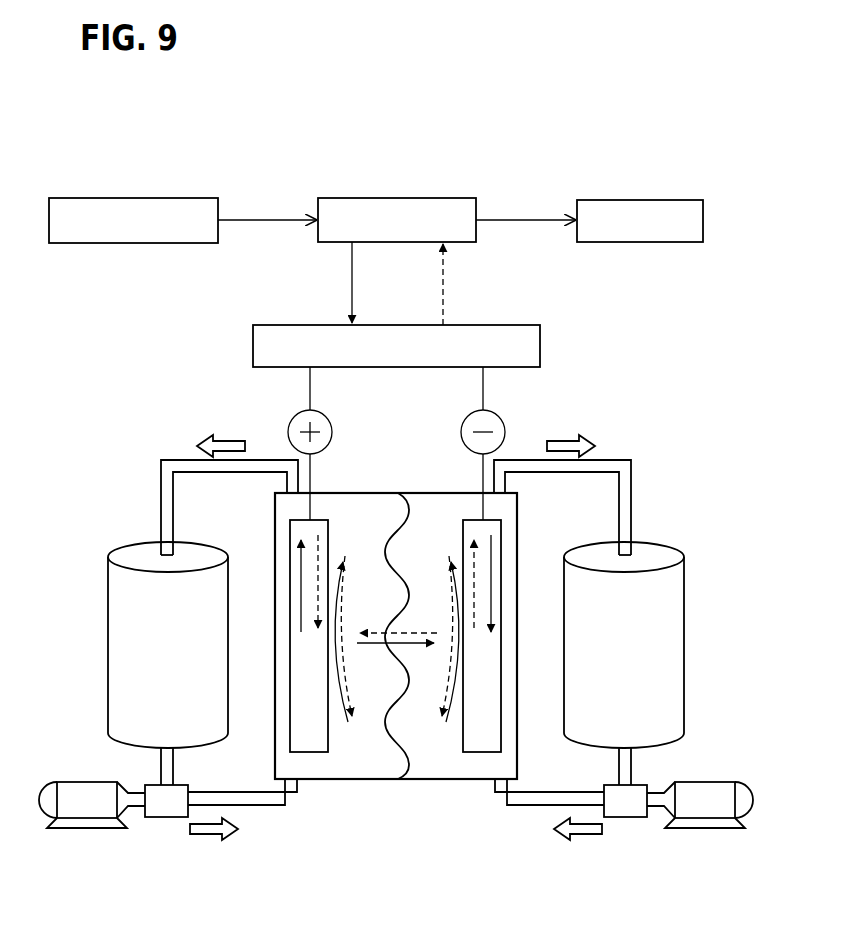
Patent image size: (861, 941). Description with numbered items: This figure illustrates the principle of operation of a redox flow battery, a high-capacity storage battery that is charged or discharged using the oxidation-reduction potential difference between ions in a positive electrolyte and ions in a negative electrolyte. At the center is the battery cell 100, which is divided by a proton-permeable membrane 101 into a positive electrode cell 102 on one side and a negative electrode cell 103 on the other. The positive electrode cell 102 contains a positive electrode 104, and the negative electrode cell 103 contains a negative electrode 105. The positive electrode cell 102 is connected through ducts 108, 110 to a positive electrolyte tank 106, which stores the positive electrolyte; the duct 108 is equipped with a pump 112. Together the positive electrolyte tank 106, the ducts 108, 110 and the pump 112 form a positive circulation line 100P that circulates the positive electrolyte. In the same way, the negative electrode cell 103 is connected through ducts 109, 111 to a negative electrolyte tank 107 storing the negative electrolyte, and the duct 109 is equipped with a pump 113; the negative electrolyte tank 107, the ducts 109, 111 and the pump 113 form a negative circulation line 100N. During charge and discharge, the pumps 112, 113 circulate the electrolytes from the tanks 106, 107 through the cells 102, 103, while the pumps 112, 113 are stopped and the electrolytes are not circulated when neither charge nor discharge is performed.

The battery cell 100 is at (462, 866).
The positive circulation line 100P is at (119, 838).
The negative circulation line 100N is at (671, 838).
The proton-permeable membrane 101 is at (389, 780).
The positive electrode cell 102 is at (335, 780).
The negative electrode cell 103 is at (455, 780).
The positive electrode 104 is at (289, 750).
The negative electrode 105 is at (502, 750).
The positive electrolyte tank 106 is at (125, 547).
The negative electrolyte tank 107 is at (665, 547).
The duct 108 is at (265, 806).
The duct 109 is at (527, 806).
The duct 110 is at (177, 460).
The duct 111 is at (614, 460).
The pump 112 is at (68, 781).
The pump 113 is at (722, 781).